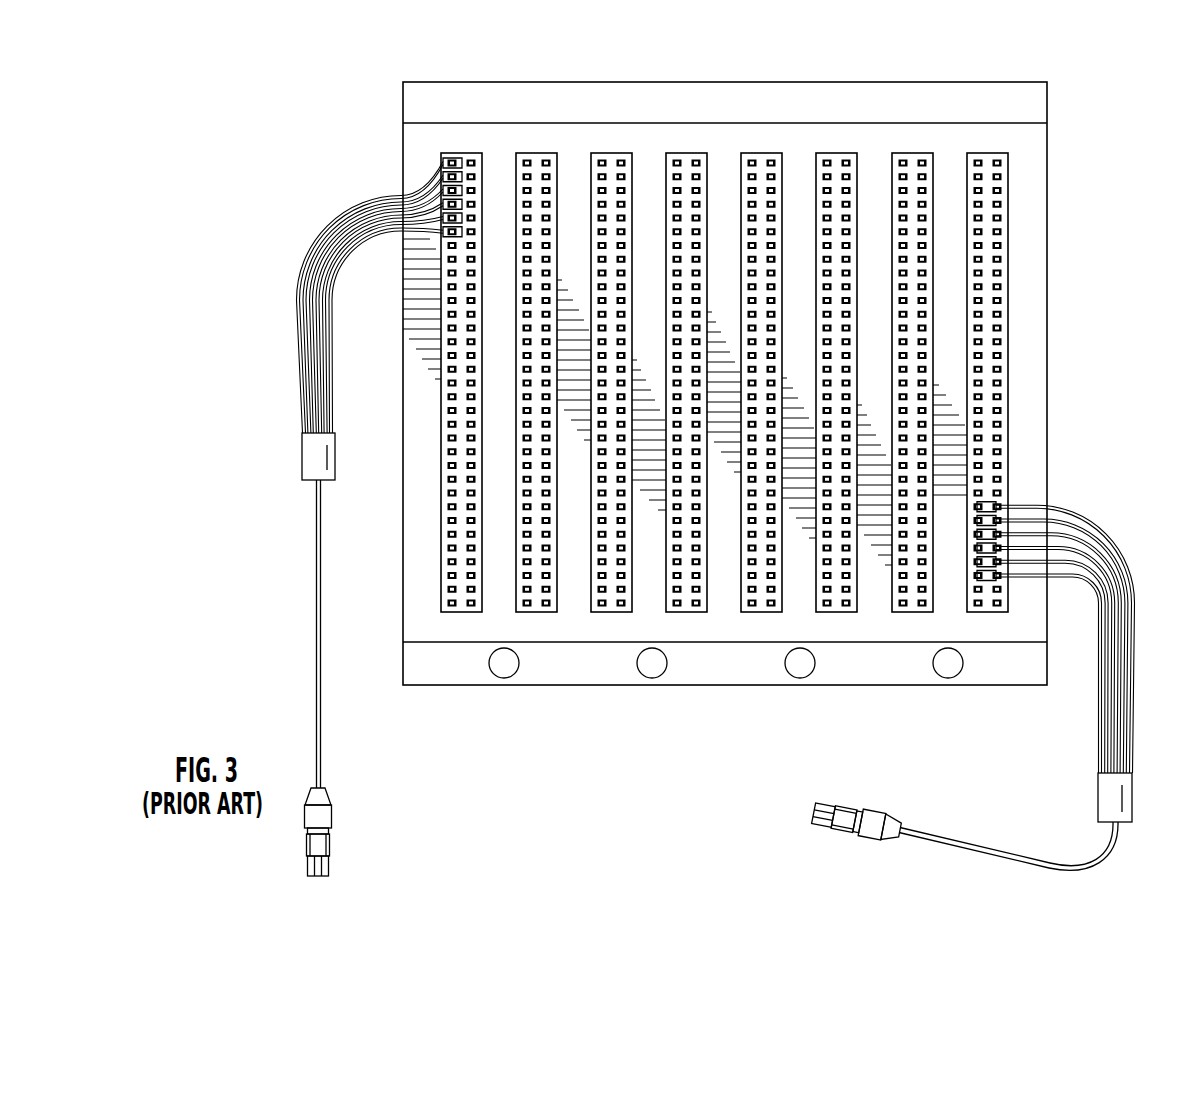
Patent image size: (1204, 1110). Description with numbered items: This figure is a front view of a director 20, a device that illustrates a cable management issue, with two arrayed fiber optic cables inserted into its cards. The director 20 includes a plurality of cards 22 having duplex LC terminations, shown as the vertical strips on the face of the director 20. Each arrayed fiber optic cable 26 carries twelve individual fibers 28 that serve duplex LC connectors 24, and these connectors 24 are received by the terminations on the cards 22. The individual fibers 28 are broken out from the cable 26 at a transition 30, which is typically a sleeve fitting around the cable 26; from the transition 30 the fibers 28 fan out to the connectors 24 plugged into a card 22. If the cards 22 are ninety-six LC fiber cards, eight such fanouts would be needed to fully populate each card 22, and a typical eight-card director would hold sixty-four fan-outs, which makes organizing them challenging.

The director 20 is at (1063, 176).
The cards 22 is at (986, 153).
The duplex LC connectors 24 is at (458, 153).
The arrayed fiber optic cable 26 is at (294, 703).
The individual fibers 28 is at (300, 372).
The transition 30 is at (308, 472).